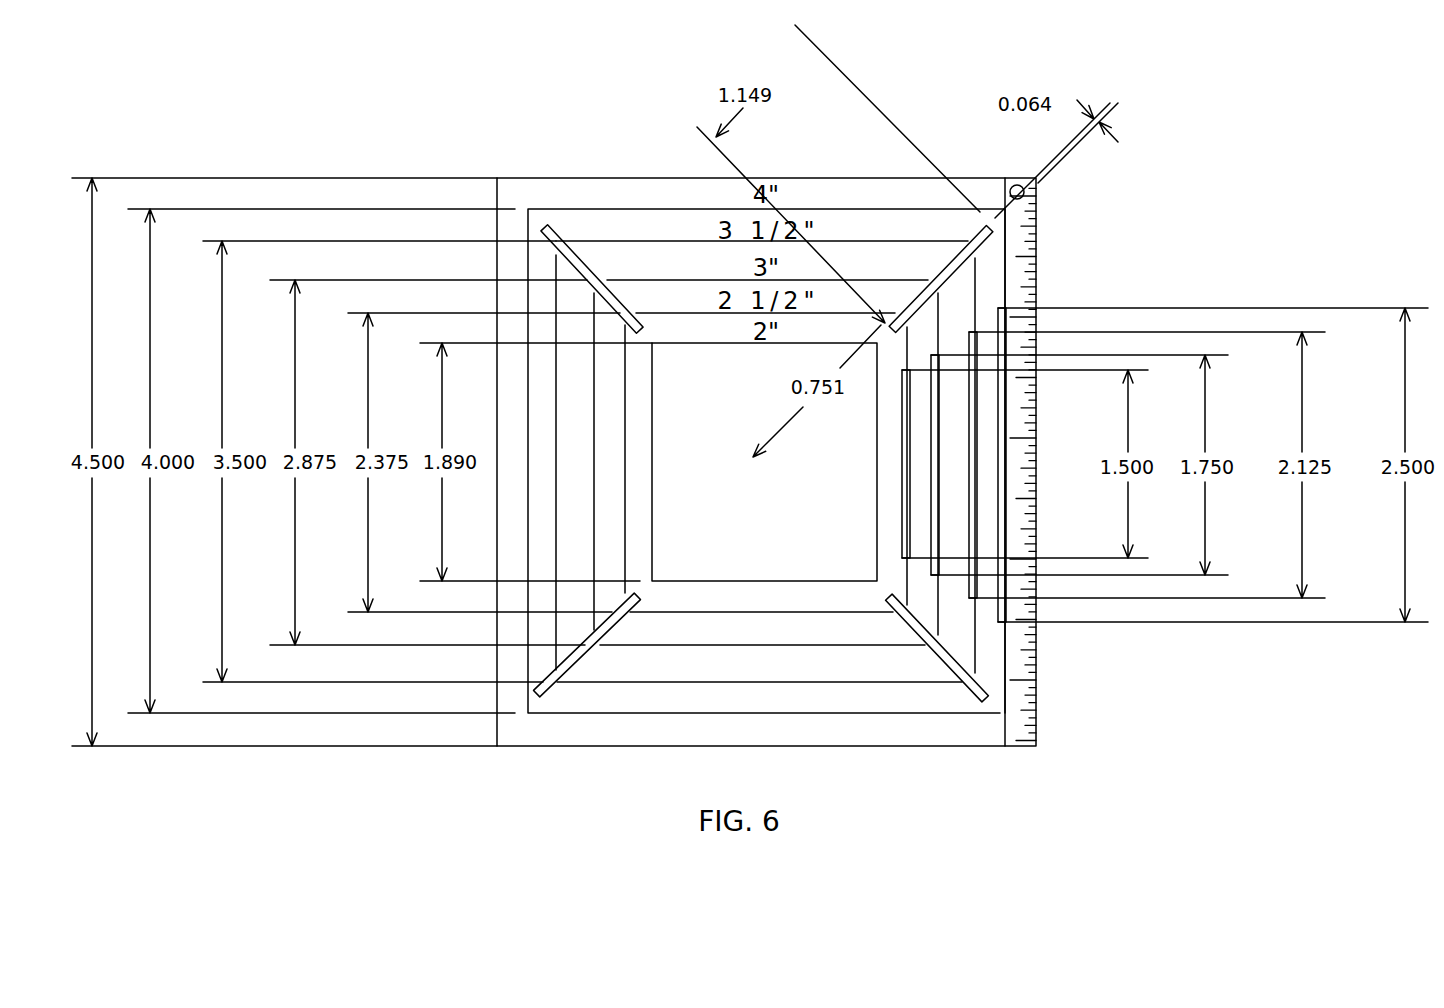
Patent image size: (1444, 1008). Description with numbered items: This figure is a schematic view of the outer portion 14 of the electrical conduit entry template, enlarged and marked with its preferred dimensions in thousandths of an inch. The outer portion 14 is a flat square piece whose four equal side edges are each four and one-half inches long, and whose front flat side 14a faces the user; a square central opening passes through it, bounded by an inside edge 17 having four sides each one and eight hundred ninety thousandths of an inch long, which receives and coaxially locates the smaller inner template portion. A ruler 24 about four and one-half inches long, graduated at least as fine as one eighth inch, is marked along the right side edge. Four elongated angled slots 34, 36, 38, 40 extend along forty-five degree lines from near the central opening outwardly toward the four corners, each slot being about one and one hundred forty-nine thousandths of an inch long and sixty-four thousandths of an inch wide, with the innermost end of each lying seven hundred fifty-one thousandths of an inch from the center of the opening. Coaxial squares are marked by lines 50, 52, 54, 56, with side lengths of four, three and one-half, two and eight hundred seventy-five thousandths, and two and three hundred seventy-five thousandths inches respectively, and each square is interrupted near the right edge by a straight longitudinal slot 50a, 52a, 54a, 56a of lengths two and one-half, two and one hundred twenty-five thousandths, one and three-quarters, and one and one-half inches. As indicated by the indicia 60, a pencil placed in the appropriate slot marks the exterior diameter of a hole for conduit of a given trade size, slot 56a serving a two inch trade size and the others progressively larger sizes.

The outer portion 14 is at (648, 131).
The front flat side 14a is at (672, 498).
The inside edge of opening 17 is at (790, 343).
The ruler 24 is at (1047, 231).
The elongated angled slot 34 is at (975, 238).
The elongated angled slot 36 is at (968, 677).
The elongated angled slot 38 is at (545, 695).
The elongated angled slot 40 is at (568, 250).
The marked square line 50 is at (757, 713).
The longitudinal slot 50a is at (998, 500).
The marked square line 52 is at (733, 682).
The longitudinal slot 52a is at (969, 472).
The marked square line 54 is at (710, 643).
The longitudinal slot 54a is at (931, 448).
The marked square line 56 is at (692, 612).
The longitudinal slot 56a is at (902, 418).
The indicia 60 is at (810, 161).